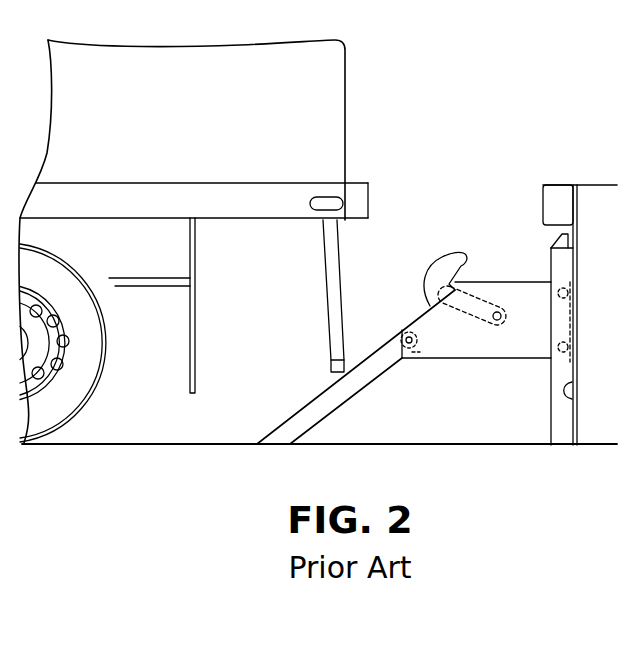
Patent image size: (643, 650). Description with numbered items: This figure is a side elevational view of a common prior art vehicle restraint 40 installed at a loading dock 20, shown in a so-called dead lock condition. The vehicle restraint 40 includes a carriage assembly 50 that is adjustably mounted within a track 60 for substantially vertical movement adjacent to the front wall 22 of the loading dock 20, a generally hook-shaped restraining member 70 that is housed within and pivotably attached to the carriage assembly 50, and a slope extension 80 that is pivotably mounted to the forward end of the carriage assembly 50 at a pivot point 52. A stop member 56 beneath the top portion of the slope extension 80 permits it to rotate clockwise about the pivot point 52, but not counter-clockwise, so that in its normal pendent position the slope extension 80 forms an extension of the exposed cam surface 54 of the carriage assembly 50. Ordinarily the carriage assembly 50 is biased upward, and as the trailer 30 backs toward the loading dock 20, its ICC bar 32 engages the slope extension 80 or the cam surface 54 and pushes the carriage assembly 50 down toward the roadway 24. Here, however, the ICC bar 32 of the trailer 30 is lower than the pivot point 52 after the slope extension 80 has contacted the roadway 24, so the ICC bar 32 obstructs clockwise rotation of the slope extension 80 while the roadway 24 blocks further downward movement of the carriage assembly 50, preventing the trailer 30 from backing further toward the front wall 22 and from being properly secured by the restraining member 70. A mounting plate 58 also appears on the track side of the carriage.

The loading dock 20 is at (620, 245).
The front wall 22 is at (574, 383).
The roadway 24 is at (423, 445).
The trailer 30 is at (267, 141).
The ICC bar 32 is at (330, 368).
The vehicle restraint 40 is at (454, 176).
The carriage assembly 50 is at (505, 353).
The pivot point 52 is at (409, 335).
The exposed cam surface 54 is at (422, 318).
The stop member 56 is at (425, 362).
The mounting plate 58 is at (497, 282).
The track 60 is at (562, 417).
The restraining member 70 is at (445, 265).
The slope extension 80 is at (323, 405).